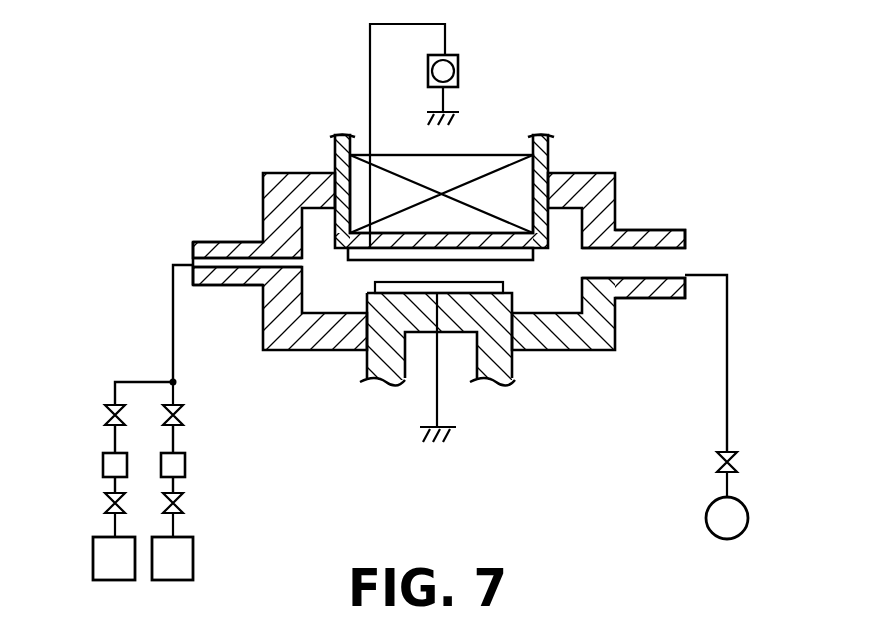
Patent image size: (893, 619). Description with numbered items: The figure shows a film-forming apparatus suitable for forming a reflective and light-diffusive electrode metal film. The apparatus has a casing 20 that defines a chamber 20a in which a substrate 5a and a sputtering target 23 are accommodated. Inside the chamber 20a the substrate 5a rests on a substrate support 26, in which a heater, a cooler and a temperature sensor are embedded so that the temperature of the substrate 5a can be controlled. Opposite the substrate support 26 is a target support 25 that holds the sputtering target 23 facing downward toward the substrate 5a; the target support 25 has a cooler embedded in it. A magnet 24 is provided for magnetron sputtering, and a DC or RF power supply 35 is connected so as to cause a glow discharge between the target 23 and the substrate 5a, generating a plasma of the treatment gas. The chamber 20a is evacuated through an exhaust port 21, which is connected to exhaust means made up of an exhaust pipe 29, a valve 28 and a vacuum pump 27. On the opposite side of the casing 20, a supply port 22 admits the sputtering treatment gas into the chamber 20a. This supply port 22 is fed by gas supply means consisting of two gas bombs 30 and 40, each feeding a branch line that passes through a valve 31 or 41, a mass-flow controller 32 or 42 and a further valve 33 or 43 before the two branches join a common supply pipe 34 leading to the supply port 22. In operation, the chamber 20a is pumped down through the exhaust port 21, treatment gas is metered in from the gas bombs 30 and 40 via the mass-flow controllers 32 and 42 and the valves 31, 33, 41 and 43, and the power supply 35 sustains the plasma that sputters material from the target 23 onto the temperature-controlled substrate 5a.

The substrate 5a is at (538, 286).
The casing 20 is at (618, 176).
The chamber 20a is at (573, 284).
The exhaust port 21 is at (668, 263).
The supply port 22 is at (197, 262).
The sputtering target 23 is at (532, 258).
The magnet 24 is at (452, 160).
The target support 25 is at (550, 140).
The substrate support 26 is at (490, 378).
The vacuum pump 27 is at (748, 518).
The valve 28 is at (737, 465).
The exhaust pipe 29 is at (727, 388).
The gas bomb 30 is at (193, 560).
The valve 31 is at (183, 503).
The mass-flow controller 32 is at (186, 463).
The valve 33 is at (183, 411).
The supply pipe 34 is at (173, 346).
The power supply 35 is at (458, 68).
The gas bomb 40 is at (93, 560).
The valve 41 is at (106, 503).
The mass-flow controller 42 is at (103, 463).
The valve 43 is at (108, 414).